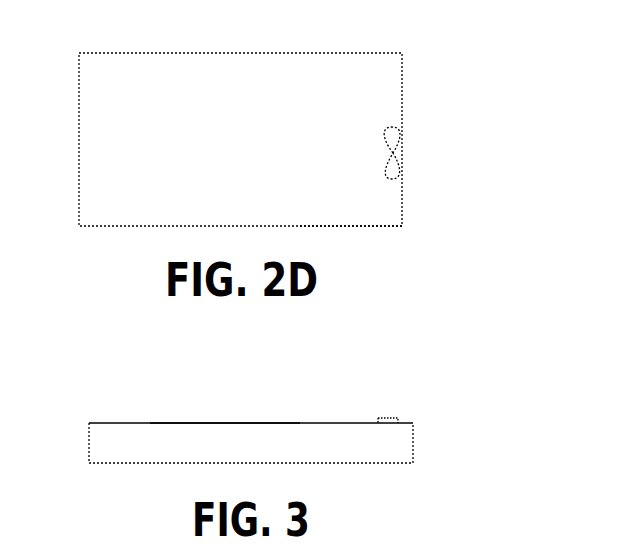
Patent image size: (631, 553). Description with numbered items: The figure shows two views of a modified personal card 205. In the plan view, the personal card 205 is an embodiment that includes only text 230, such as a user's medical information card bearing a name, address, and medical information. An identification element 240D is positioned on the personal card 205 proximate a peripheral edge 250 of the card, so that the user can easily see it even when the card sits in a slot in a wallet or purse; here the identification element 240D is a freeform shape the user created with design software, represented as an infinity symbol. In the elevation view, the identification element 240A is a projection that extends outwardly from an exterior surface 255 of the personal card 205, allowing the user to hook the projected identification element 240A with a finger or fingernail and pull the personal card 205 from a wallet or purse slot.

In FIG. 2D, the personal card 205 is at (378, 226).
In FIG. 3, the personal card 205 is at (362, 463).
In FIG. 2D, the text 230 is at (197, 132).
In FIG. 2D, the identification element 240D is at (398, 141).
In FIG. 2D, the peripheral edge 250 is at (332, 226).
In FIG. 3, the exterior surface 255 is at (207, 423).
In FIG. 3, the identification element 240A is at (378, 419).